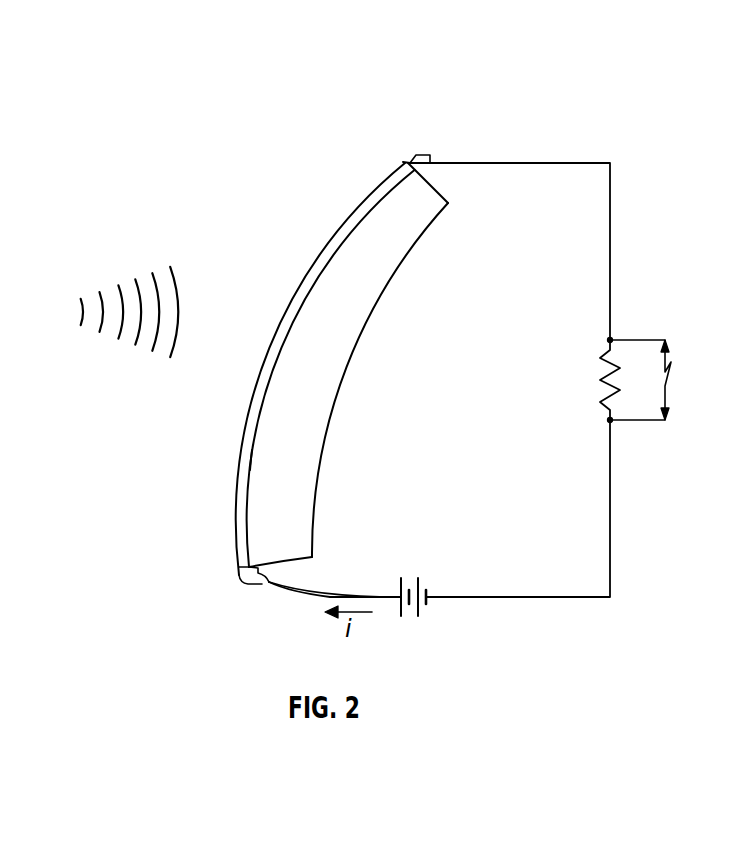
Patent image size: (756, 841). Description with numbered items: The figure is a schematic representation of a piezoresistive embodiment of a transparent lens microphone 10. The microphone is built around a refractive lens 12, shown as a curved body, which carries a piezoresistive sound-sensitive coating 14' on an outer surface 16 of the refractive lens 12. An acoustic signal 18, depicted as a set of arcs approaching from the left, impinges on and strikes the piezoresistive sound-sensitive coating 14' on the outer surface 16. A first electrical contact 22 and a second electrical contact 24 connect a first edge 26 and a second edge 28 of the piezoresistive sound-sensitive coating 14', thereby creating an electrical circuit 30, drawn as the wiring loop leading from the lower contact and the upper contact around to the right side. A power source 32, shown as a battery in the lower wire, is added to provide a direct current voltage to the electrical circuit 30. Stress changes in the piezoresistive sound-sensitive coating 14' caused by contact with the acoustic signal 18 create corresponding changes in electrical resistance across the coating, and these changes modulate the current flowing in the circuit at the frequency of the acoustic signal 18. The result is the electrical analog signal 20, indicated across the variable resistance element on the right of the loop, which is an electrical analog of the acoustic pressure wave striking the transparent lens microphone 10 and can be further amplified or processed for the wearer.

The transparent lens microphone 10 is at (178, 105).
The refractive lens 12 is at (358, 338).
The piezoresistive sound-sensitive coating 14' is at (325, 373).
The outer surface 16 is at (253, 460).
The acoustic signal 18 is at (178, 338).
The electrical analog signal 20 is at (672, 386).
The first electrical contact 22 is at (247, 580).
The second electrical contact 24 is at (421, 155).
The first edge 26 is at (240, 568).
The second edge 28 is at (405, 163).
The electrical circuit 30 is at (610, 513).
The power source 32 is at (420, 611).